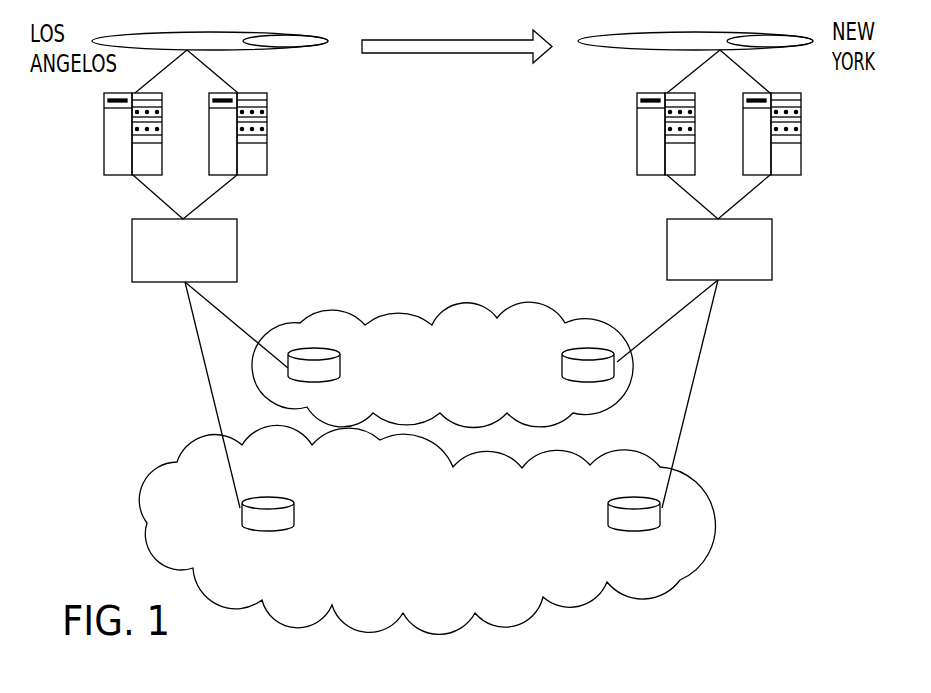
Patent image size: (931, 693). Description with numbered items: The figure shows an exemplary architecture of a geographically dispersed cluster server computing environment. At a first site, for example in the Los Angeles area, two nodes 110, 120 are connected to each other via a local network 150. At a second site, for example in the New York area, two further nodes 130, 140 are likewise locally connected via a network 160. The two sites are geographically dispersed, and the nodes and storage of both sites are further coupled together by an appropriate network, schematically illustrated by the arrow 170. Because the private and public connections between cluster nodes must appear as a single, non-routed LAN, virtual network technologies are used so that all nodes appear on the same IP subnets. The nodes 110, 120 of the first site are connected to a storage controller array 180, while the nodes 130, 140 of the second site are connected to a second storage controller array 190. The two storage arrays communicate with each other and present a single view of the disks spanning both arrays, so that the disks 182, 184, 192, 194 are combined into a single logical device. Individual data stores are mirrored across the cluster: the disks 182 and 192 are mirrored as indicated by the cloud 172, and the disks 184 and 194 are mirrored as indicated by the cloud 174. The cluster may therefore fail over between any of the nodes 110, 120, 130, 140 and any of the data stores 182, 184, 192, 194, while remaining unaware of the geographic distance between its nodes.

The node 110 is at (104, 146).
The node 120 is at (267, 146).
The node 130 is at (637, 146).
The node 140 is at (802, 146).
The network 150 is at (251, 32).
The network 160 is at (730, 32).
The network 170 is at (475, 40).
The cloud 172 is at (403, 310).
The cloud 174 is at (367, 633).
The storage controller array 180 is at (237, 250).
The second storage controller array 190 is at (772, 250).
The disk 182 is at (340, 366).
The disk 192 is at (562, 366).
The disk 184 is at (293, 518).
The disk 194 is at (608, 515).